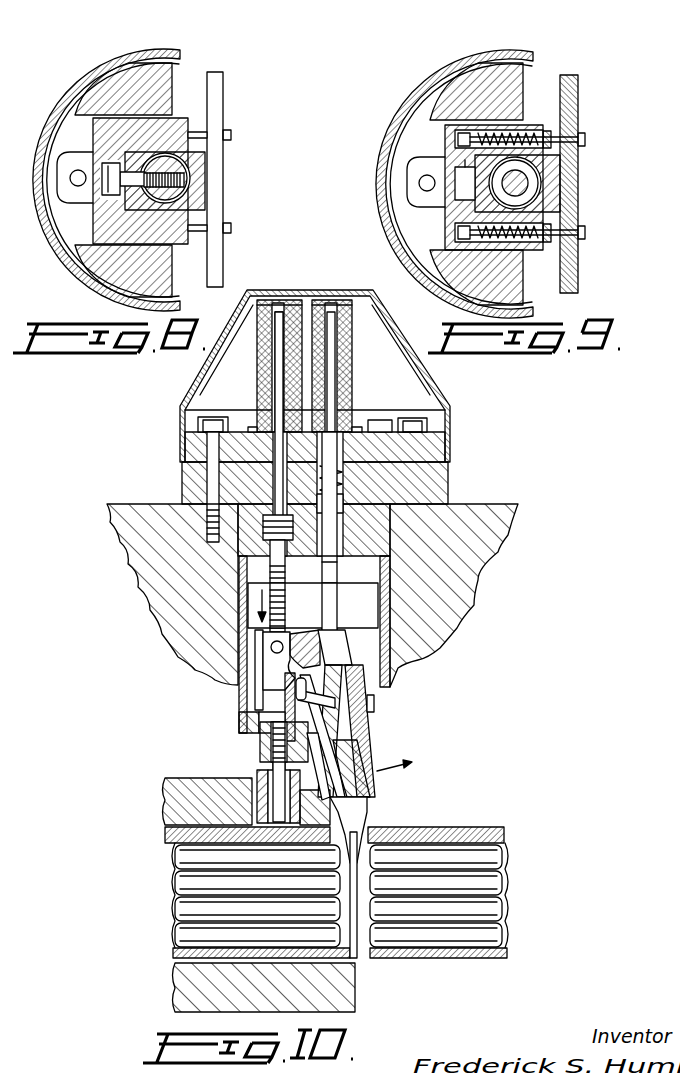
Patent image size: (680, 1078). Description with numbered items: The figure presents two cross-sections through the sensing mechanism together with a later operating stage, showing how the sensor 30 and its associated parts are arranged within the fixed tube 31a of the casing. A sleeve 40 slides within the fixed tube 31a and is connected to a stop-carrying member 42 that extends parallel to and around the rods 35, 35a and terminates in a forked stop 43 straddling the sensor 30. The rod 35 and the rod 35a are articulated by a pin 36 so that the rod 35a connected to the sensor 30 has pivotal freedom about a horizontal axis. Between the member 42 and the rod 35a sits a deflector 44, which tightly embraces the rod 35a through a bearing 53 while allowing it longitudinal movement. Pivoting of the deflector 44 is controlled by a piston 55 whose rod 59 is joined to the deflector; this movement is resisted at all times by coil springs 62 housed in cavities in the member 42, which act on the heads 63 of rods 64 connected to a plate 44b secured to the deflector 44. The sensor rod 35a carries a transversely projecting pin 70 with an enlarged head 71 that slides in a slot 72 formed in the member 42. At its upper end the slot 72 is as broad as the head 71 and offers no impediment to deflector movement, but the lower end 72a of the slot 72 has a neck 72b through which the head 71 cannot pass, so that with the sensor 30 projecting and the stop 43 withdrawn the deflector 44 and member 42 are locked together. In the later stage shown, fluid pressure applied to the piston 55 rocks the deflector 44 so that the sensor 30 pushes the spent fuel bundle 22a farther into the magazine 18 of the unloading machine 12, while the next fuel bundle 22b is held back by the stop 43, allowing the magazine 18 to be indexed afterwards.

In FIG. 10, the unloading machine 12 is at (246, 1002).
In FIG. 10, the magazine 18 is at (402, 958).
In FIG. 10, the spent fuel bundle 22a is at (505, 873).
In FIG. 10, the next fuel bundle 22b is at (181, 913).
In FIG. 10, the sensor 30 is at (358, 812).
In FIG. 8, the fixed tube 31a is at (104, 66).
In FIG. 9, the fixed tube 31a is at (407, 258).
In FIG. 10, the rod 35 is at (330, 604).
In FIG. 8, the rod 35a is at (186, 164).
In FIG. 9, the rod 35a is at (526, 177).
In FIG. 10, the rod 35a is at (373, 783).
In FIG. 10, the pin 36 is at (336, 636).
In FIG. 8, the sleeve 40 is at (62, 136).
In FIG. 9, the sleeve 40 is at (410, 228).
In FIG. 8, the stop-carrying member 42 is at (100, 124).
In FIG. 9, the stop-carrying member 42 is at (450, 158).
In FIG. 10, the stop-carrying member 42 is at (262, 745).
In FIG. 10, the forked stop 43 is at (371, 858).
In FIG. 8, the deflector 44 is at (202, 199).
In FIG. 9, the deflector 44 is at (560, 201).
In FIG. 10, the deflector 44 is at (361, 739).
In FIG. 8, the plate 44b is at (215, 108).
In FIG. 9, the plate 44b is at (572, 98).
In FIG. 10, the plate 44b is at (375, 706).
In FIG. 9, the bearing 53 is at (536, 191).
In FIG. 10, the piston 55 is at (243, 553).
In FIG. 10, the rod 59 is at (243, 600).
In FIG. 9, the coil springs 62 is at (478, 133).
In FIG. 9, the heads 63 is at (465, 138).
In FIG. 9, the rods 64 is at (548, 130).
In FIG. 8, the pin 70 is at (126, 190).
In FIG. 8, the head 71 is at (128, 178).
In FIG. 8, the slot 72 is at (121, 168).
In FIG. 9, the lower end of slot 72a is at (462, 192).
In FIG. 9, the neck 72b is at (468, 165).